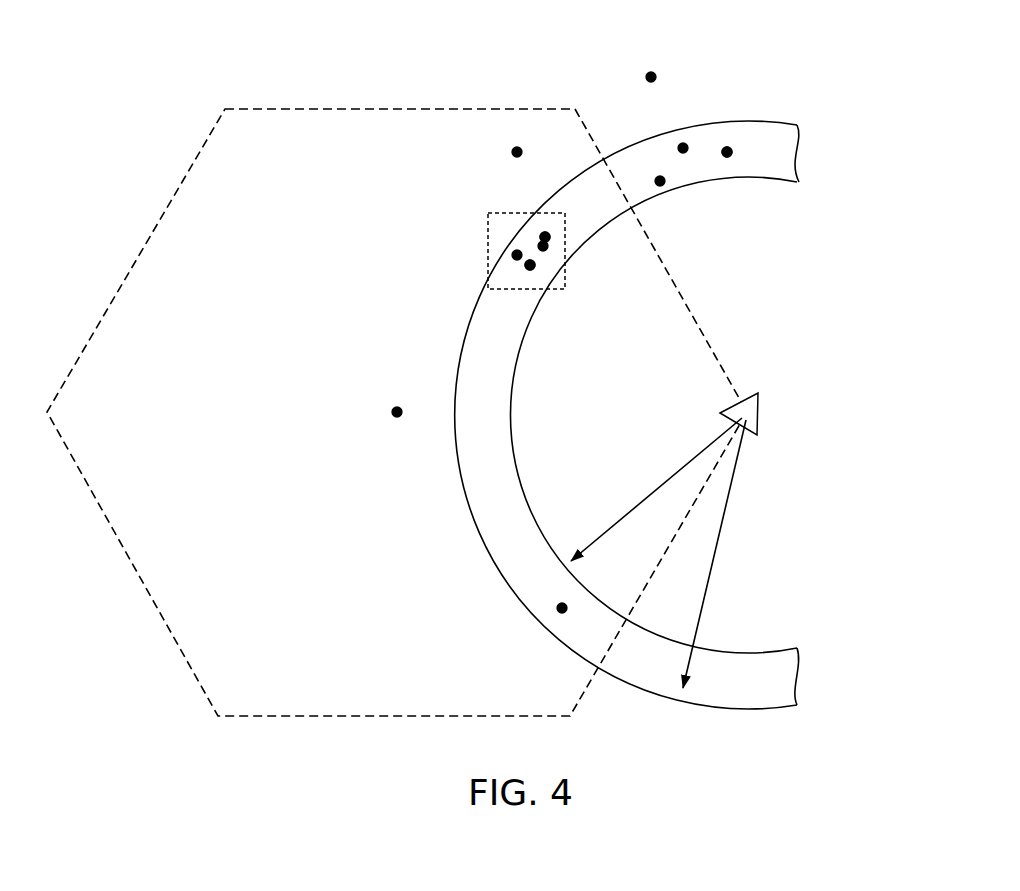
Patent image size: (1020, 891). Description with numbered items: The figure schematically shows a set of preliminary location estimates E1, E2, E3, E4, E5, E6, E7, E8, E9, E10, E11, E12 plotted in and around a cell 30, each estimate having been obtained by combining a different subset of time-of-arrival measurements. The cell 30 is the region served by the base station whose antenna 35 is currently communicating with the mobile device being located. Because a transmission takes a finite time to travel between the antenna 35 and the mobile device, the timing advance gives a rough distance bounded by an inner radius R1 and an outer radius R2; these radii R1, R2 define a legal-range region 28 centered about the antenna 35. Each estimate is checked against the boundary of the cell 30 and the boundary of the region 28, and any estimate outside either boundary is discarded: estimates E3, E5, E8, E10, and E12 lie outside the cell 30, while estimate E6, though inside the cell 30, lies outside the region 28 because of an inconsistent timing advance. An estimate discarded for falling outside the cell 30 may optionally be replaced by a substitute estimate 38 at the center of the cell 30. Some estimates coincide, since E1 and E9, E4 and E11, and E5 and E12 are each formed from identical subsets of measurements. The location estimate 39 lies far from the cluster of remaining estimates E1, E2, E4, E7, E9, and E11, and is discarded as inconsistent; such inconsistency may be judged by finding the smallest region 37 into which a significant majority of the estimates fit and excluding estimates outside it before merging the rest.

The cell 30 is at (306, 106).
The legal-range region 28 is at (799, 680).
The antenna 35 is at (761, 405).
The region 37 is at (521, 297).
The substitute estimate 38 is at (393, 404).
The location estimate 39 is at (560, 621).
The inner radius R1 is at (679, 468).
The outer radius R2 is at (731, 502).
The location estimate E1 is at (535, 233).
The location estimate E2 is at (509, 254).
The location estimate E3 is at (653, 64).
The location estimate E4 is at (523, 271).
The location estimate E5 is at (728, 164).
The location estimate E6 is at (511, 146).
The location estimate E7 is at (552, 256).
The location estimate E8 is at (684, 135).
The location estimate E9 is at (545, 237).
The location estimate E10 is at (668, 193).
The location estimate E11 is at (530, 265).
The location estimate E12 is at (727, 152).